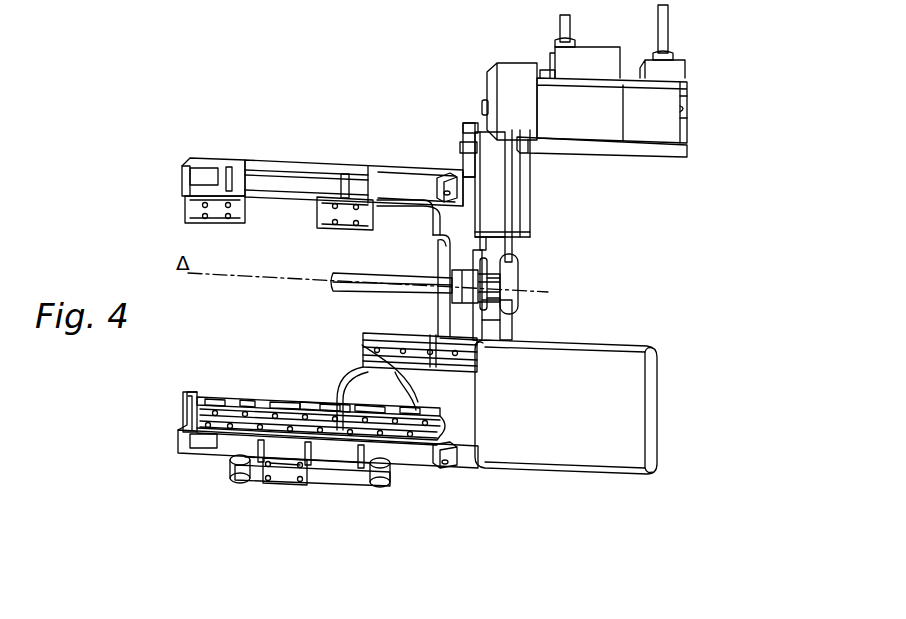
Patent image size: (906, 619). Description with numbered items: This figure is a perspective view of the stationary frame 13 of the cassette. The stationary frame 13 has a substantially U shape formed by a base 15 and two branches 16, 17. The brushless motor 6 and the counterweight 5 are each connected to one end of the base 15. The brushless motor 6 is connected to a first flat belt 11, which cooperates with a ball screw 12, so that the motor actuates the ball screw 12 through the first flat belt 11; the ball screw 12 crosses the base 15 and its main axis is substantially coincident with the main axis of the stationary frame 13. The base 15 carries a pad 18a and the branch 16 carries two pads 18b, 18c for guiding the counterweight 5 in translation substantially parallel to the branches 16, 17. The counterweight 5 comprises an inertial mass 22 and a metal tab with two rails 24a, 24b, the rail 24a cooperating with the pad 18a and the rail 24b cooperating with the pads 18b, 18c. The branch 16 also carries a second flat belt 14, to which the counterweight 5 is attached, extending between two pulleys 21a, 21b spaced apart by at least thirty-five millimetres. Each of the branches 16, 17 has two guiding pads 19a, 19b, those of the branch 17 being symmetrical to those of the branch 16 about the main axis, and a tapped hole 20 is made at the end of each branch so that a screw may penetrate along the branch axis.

The counterweight 5 is at (657, 398).
The brushless motor 6 is at (688, 111).
The first flat belt 11 is at (516, 255).
The ball screw 12 is at (525, 292).
The stationary frame 13 is at (420, 148).
The second flat belt 14 is at (342, 486).
The base 15 is at (486, 328).
The branch 16 is at (205, 455).
The branch 17 is at (293, 168).
The pad 18a is at (433, 338).
The pad 18b is at (403, 410).
The pad 18c is at (264, 397).
The guiding pad 19a is at (318, 213).
The guiding pad 19b is at (205, 204).
The tapped hole 20 is at (187, 177).
The pulley 21a is at (243, 481).
The pulley 21b is at (378, 486).
The inertial mass 22 is at (660, 425).
The rail 24a is at (420, 365).
The rail 24b is at (403, 365).